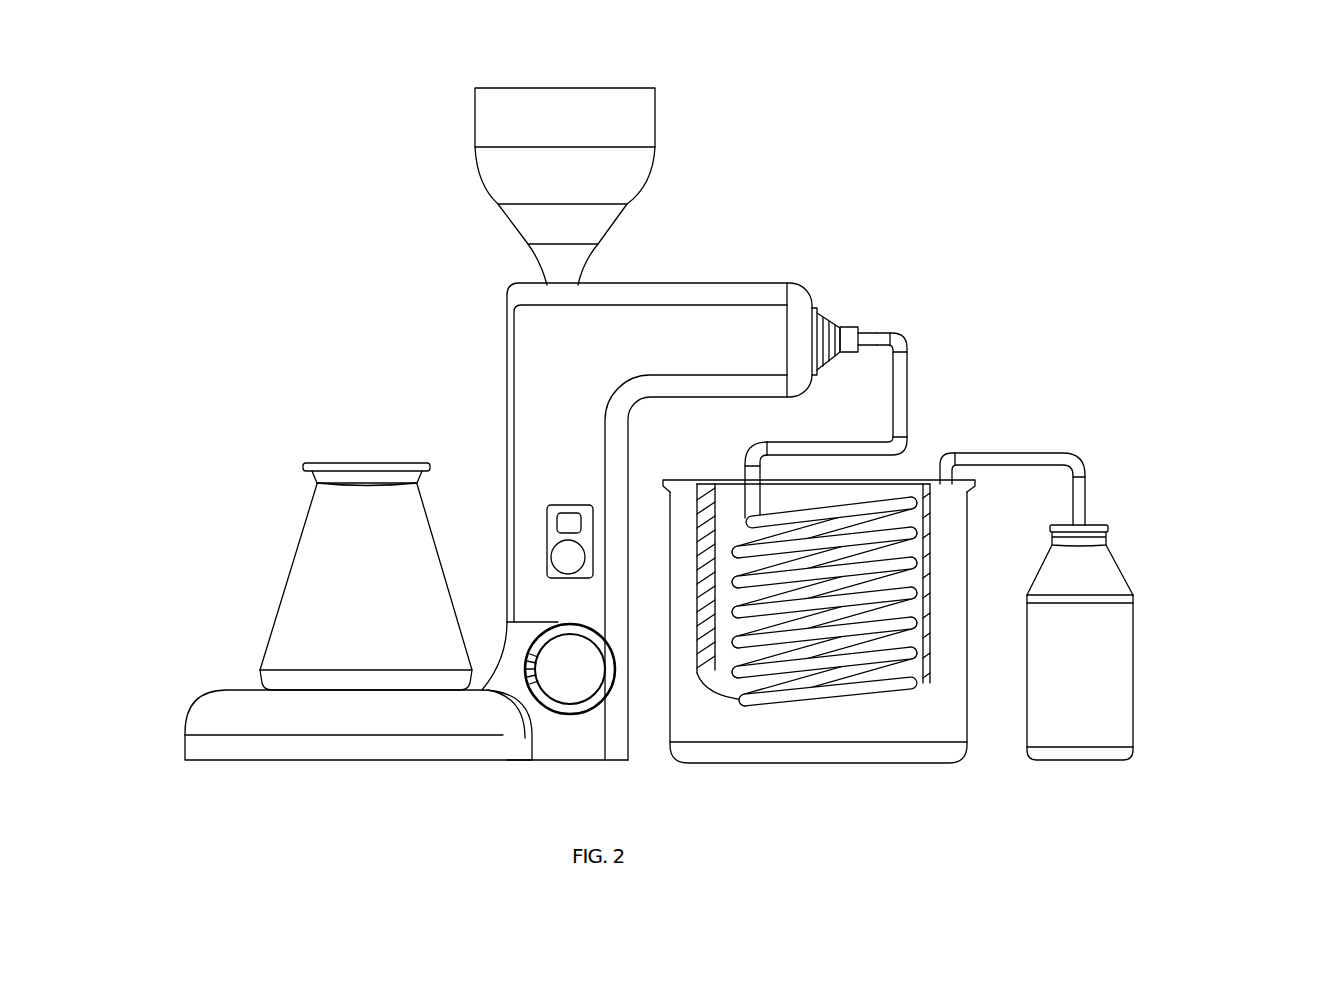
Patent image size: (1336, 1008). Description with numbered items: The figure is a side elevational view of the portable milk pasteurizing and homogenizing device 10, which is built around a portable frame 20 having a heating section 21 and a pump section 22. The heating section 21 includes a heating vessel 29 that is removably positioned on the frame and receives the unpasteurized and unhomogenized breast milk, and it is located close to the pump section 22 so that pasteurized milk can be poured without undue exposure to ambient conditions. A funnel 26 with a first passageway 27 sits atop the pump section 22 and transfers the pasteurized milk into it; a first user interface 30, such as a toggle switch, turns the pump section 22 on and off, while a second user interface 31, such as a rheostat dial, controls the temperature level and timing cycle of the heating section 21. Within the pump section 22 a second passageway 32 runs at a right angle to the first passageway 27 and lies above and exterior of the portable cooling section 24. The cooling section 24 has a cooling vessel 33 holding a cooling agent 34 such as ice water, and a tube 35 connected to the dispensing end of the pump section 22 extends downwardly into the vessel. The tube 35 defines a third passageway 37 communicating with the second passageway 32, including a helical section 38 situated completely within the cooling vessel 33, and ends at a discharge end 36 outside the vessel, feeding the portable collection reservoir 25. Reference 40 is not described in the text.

The portable milk pasteurizing and homogenizing device 10 is at (879, 135).
The portable frame 20 is at (578, 521).
The heating section 21 is at (147, 676).
The pump section 22 is at (669, 227).
The portable cooling section 24 is at (887, 797).
The portable collection reservoir 25 is at (1162, 642).
The funnel 26 is at (519, 100).
The first passageway 27 is at (499, 216).
The heating vessel 29 is at (320, 576).
The first user interface 30 is at (471, 487).
The second user interface 31 is at (515, 734).
The second passageway 32 is at (858, 352).
The cooling vessel 33 is at (845, 671).
The cooling agent 34 is at (813, 663).
The tube 35 is at (725, 448).
The discharge end 36 is at (1094, 491).
The third passageway 37 is at (900, 519).
The helical section 38 is at (822, 632).
The grinder housing arm 40 is at (780, 287).